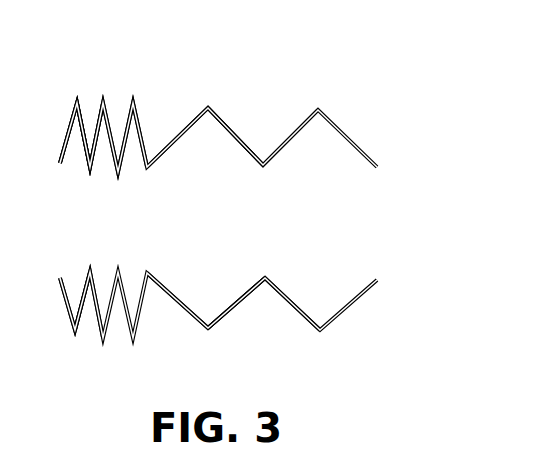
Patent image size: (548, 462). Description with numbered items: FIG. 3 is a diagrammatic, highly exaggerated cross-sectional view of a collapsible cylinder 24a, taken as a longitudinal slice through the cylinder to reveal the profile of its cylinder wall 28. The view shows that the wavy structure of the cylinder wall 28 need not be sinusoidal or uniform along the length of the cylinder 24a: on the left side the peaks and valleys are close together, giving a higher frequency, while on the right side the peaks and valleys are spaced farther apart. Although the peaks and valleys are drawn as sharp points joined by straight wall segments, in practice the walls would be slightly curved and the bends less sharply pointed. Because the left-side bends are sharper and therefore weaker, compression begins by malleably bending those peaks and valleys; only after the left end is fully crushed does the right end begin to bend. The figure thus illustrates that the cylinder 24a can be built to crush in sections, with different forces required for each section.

The collapsible cylinder 24a is at (331, 87).
The cylinder wall 28 is at (140, 127).